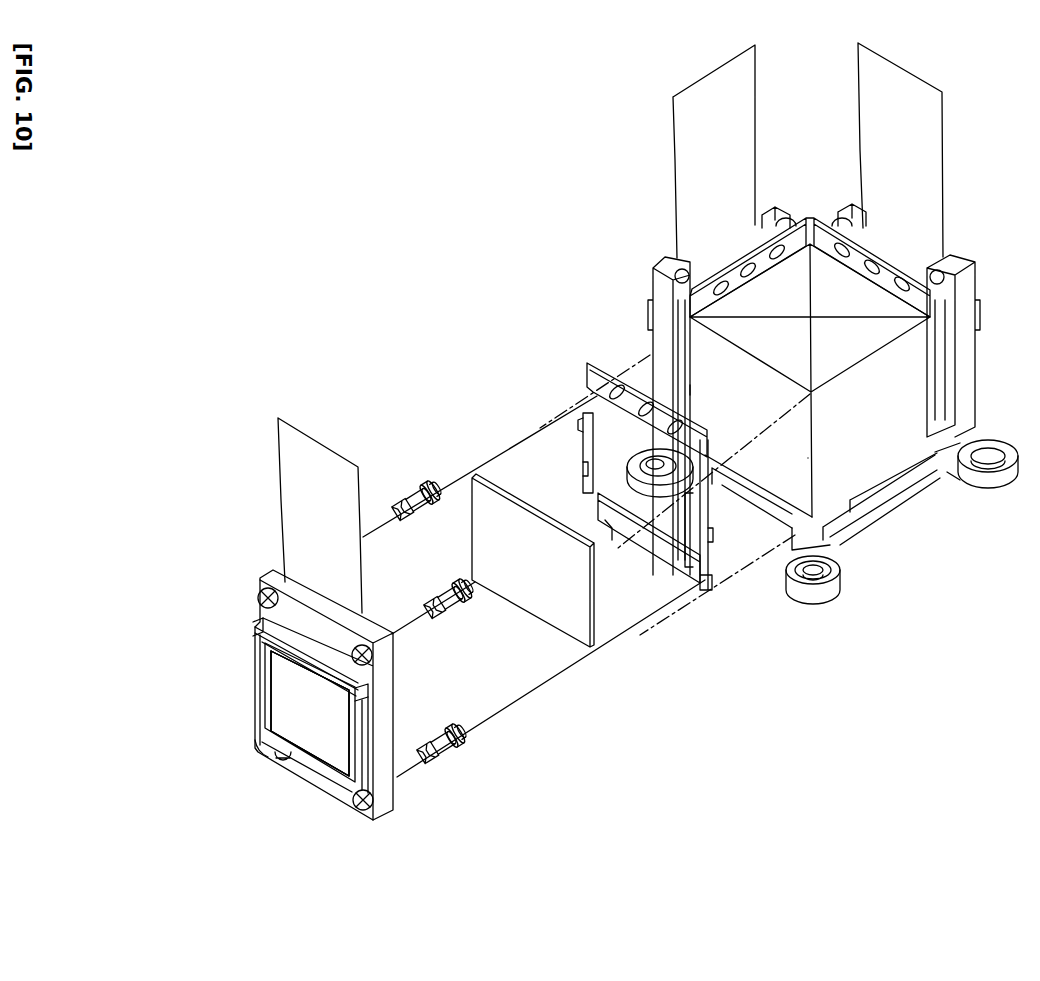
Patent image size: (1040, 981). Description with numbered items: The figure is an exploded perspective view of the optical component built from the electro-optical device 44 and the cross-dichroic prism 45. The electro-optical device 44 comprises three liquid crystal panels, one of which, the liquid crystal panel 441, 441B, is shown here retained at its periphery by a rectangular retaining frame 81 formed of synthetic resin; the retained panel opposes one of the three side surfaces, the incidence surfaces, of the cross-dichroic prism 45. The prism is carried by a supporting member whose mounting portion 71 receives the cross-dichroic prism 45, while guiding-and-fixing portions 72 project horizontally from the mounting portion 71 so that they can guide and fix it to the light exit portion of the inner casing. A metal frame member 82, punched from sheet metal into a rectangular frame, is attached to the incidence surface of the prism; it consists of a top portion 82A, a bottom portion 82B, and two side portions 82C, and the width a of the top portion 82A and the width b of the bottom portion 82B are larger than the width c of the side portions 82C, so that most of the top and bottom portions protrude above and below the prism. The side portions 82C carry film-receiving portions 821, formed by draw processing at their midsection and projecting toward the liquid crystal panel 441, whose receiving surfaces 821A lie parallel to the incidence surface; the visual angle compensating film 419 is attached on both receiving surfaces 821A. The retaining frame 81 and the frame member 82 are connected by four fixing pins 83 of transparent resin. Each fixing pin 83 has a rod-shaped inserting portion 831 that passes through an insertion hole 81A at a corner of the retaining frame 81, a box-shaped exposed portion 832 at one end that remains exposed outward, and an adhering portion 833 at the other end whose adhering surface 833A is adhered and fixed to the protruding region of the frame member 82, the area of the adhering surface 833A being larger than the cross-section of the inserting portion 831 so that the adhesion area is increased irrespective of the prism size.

The electro-optical device 44 is at (620, 197).
The cross-dichroic prism 45 is at (888, 443).
The mounting portion 71 is at (867, 492).
The guiding-and-fixing portions 72 is at (650, 460).
The retaining frame 81 is at (255, 568).
The insertion holes 81A is at (260, 600).
The frame member 82 is at (718, 385).
The top portion 82A is at (651, 388).
The bottom portion 82B is at (649, 551).
The side portions 82C is at (583, 420).
The film-receiving portions 821 is at (581, 441).
The receiving surfaces 821A is at (585, 468).
The fixing pins 83 is at (613, 482).
The inserting portion 831 is at (419, 499).
The exposed portion 832 is at (403, 510).
The adhering portion 833 is at (430, 493).
The adhering surface 833A is at (414, 472).
The visual angle compensating film 419 is at (551, 607).
The liquid crystal panel 441 is at (312, 730).
The liquid crystal panel for blue light 441B is at (310, 713).
The width of the top portion a is at (690, 390).
The width of the bottom portion b is at (611, 538).
The width of the side portions c is at (590, 394).